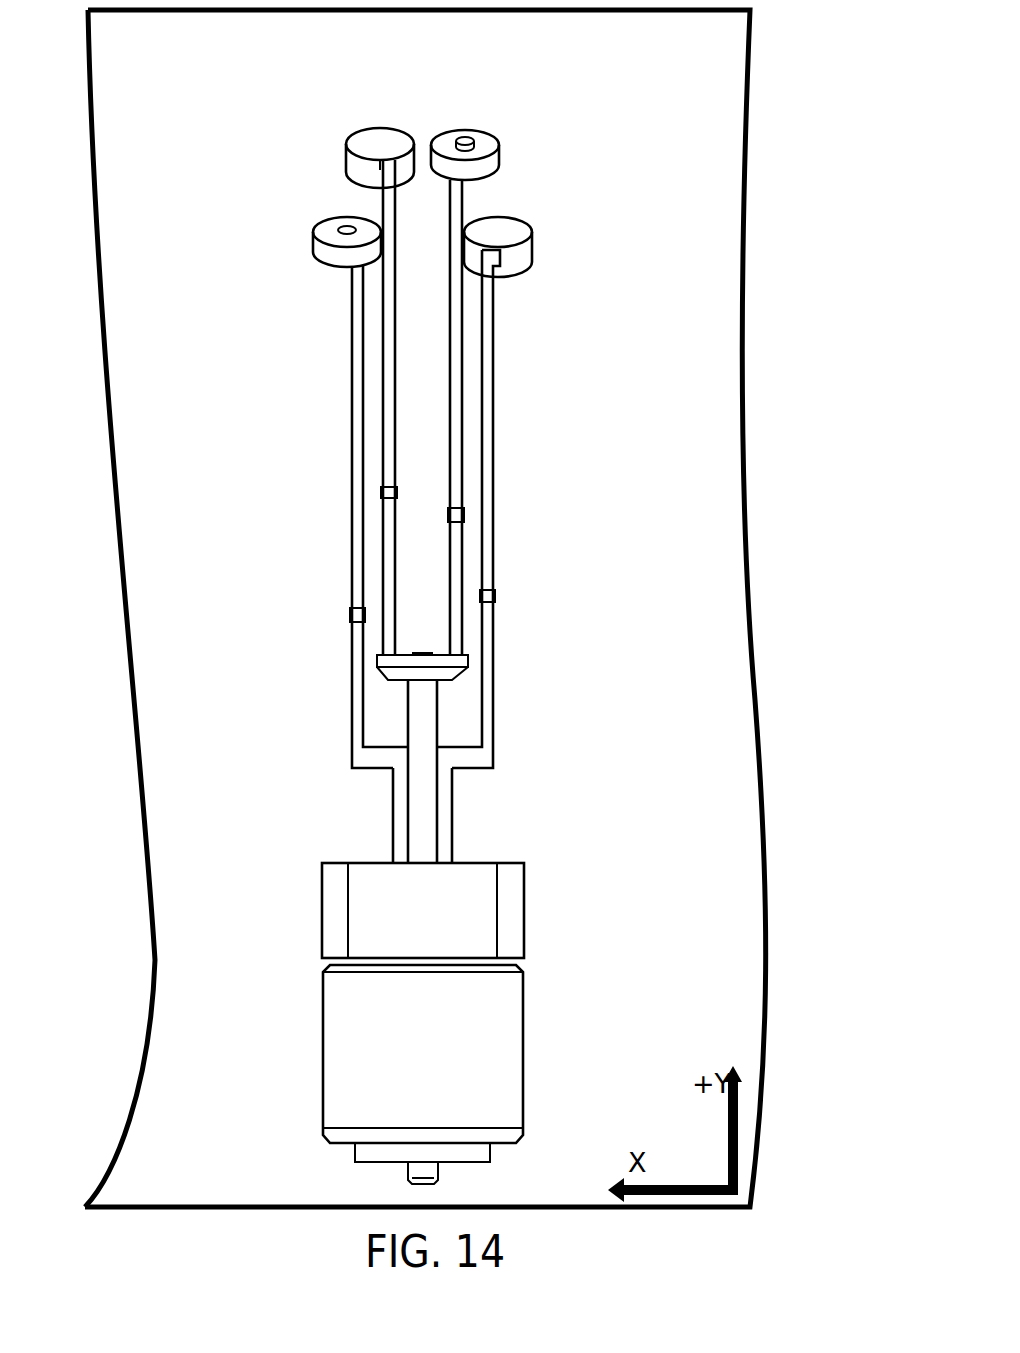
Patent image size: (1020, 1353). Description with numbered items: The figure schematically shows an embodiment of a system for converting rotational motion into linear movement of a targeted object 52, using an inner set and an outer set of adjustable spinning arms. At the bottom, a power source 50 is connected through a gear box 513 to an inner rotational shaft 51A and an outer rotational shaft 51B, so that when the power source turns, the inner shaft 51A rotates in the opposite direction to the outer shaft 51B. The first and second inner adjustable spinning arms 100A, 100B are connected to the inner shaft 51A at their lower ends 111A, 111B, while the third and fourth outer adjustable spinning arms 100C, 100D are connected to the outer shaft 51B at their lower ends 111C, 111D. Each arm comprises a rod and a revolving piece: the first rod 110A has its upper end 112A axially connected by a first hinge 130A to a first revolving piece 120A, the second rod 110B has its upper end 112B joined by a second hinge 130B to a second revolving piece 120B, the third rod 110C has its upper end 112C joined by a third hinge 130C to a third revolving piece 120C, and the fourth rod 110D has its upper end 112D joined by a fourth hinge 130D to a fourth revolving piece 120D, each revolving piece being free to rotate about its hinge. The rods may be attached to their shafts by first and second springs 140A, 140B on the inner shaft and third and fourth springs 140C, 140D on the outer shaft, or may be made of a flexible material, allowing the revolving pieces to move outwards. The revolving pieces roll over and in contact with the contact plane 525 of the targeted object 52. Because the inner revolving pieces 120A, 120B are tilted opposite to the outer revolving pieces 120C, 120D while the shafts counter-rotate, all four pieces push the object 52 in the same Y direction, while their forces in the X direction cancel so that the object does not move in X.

The power source 50 is at (480, 1052).
The inner rotational shaft 51A is at (420, 787).
The outer rotational shaft 51B is at (390, 800).
The targeted object 52 is at (693, 992).
The gear box 513 is at (503, 890).
The contact plane 525 is at (155, 513).
The first inner adjustable spinning arm 100A is at (375, 463).
The second inner adjustable spinning arm 100B is at (463, 472).
The third outer adjustable spinning arm 100C is at (347, 557).
The fourth outer adjustable spinning arm 100D is at (505, 567).
The first rod 110A is at (385, 378).
The second rod 110B is at (462, 388).
The third rod 110C is at (343, 343).
The fourth rod 110D is at (505, 357).
The lower end of first rod 111A is at (377, 642).
The lower end of second rod 111B is at (468, 620).
The lower end of third rod 111C is at (355, 742).
The lower end of fourth rod 111D is at (493, 753).
The upper end of first rod 112A is at (362, 182).
The upper end of second rod 112B is at (485, 195).
The upper end of third rod 112C is at (343, 285).
The upper end of fourth rod 112D is at (503, 298).
The first revolving piece 120A is at (332, 132).
The second revolving piece 120B is at (518, 145).
The third revolving piece 120C is at (313, 262).
The fourth revolving piece 120D is at (530, 275).
The first hinge 130A is at (378, 122).
The second hinge 130B is at (470, 130).
The third hinge 130C is at (333, 228).
The fourth hinge 130D is at (512, 238).
The first spring 140A is at (377, 495).
The second spring 140B is at (347, 617).
The third spring 140C is at (465, 513).
The fourth spring 140D is at (495, 595).